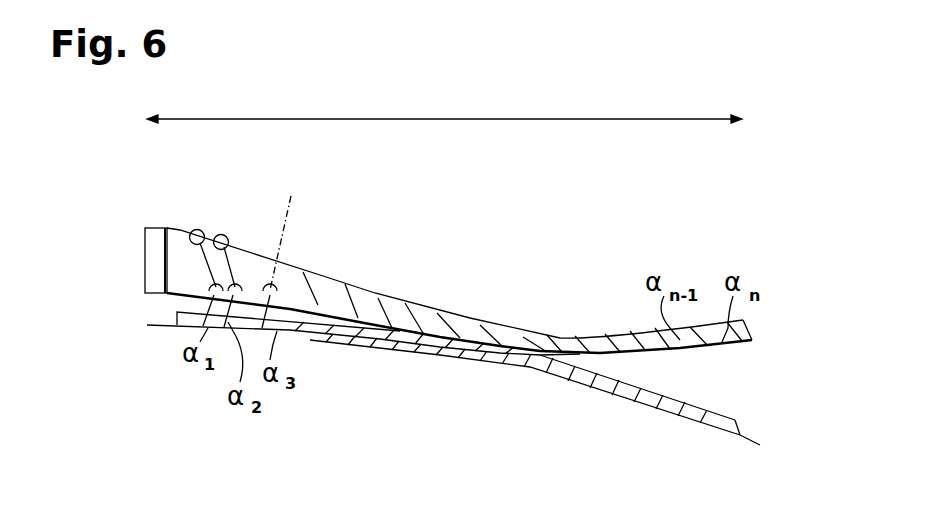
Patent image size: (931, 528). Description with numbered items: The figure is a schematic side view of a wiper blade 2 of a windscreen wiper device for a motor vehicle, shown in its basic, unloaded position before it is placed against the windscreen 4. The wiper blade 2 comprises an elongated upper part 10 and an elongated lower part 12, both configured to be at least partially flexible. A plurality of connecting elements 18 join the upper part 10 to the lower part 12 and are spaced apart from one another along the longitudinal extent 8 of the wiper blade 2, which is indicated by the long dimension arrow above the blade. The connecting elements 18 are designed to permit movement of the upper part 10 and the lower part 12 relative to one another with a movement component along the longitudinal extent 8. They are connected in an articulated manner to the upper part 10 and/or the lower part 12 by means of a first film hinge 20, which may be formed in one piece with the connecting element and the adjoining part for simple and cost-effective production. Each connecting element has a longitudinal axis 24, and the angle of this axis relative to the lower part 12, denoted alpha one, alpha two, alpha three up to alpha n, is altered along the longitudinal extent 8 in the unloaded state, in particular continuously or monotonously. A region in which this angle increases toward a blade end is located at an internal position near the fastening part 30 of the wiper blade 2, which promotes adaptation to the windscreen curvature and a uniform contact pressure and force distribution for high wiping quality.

The wiper blade 2 is at (459, 255).
The windscreen 4 is at (622, 392).
The longitudinal extent 8 is at (445, 119).
The upper part 10 is at (456, 322).
The lower part 12 is at (655, 356).
The connecting elements 18 is at (372, 297).
The first film hinge 20 is at (198, 230).
The longitudinal axis 24 is at (289, 225).
The fastening part 30 is at (150, 266).